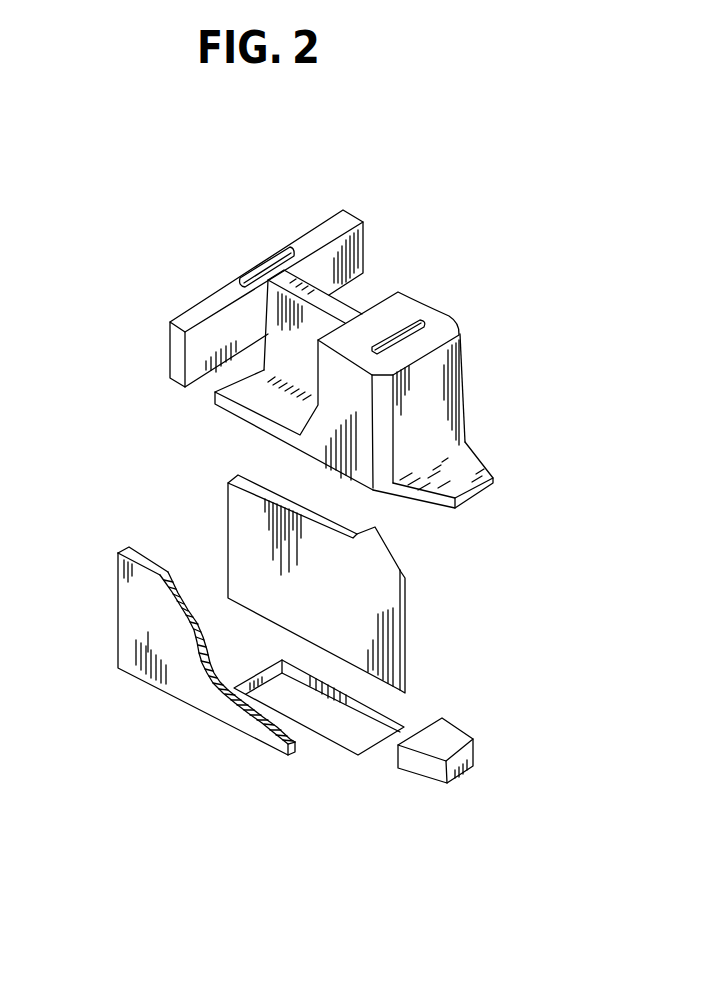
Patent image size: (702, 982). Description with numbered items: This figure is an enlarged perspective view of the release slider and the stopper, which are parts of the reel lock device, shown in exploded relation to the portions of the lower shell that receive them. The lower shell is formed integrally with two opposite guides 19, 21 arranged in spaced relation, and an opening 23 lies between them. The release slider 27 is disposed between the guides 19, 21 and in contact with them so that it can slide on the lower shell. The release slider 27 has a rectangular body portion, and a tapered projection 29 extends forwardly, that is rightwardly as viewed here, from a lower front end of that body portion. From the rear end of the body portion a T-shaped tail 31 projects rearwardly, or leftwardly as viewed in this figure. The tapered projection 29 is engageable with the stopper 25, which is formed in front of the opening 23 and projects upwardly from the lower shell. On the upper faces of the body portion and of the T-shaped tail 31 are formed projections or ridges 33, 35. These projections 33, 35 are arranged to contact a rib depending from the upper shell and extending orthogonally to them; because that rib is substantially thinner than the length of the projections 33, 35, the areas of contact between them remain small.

The guide 19 is at (135, 632).
The guide 21 is at (405, 637).
The opening 23 is at (322, 734).
The stopper 25 is at (466, 737).
The release slider 27 is at (410, 300).
The tapered projection 29 is at (482, 457).
The T-shaped tail 31 is at (186, 310).
The projection 33 is at (407, 337).
The projection 35 is at (262, 268).